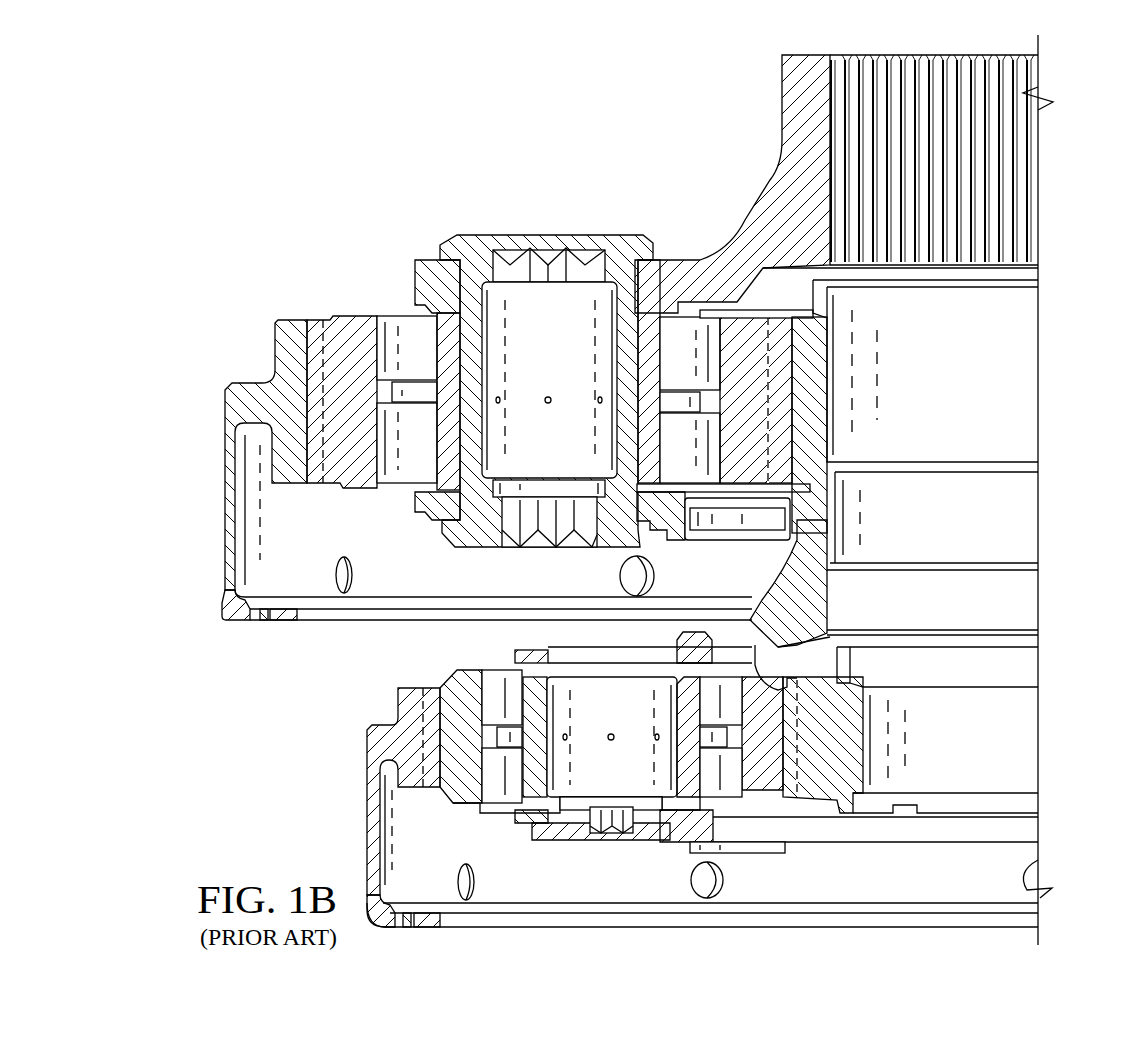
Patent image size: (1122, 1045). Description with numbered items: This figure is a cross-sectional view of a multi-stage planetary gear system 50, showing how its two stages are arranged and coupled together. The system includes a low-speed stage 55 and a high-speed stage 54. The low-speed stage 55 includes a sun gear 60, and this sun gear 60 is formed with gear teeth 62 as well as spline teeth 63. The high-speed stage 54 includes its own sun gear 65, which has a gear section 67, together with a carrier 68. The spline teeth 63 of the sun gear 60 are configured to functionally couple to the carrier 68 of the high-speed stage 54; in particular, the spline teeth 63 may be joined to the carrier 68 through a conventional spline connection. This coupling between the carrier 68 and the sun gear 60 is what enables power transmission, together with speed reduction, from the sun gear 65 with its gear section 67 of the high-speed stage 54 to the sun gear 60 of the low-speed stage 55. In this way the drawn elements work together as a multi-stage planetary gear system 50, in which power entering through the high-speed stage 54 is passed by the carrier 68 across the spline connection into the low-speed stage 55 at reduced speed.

The multi-stage planetary gear system 50 is at (424, 90).
The high-speed stage 54 is at (347, 800).
The low-speed stage 55 is at (211, 450).
The sun gear 60 is at (1010, 425).
The gear teeth 62 is at (793, 405).
The spline teeth 63 is at (800, 618).
The sun gear 65 is at (1010, 733).
The gear section 67 is at (805, 728).
The carrier 68 is at (778, 553).